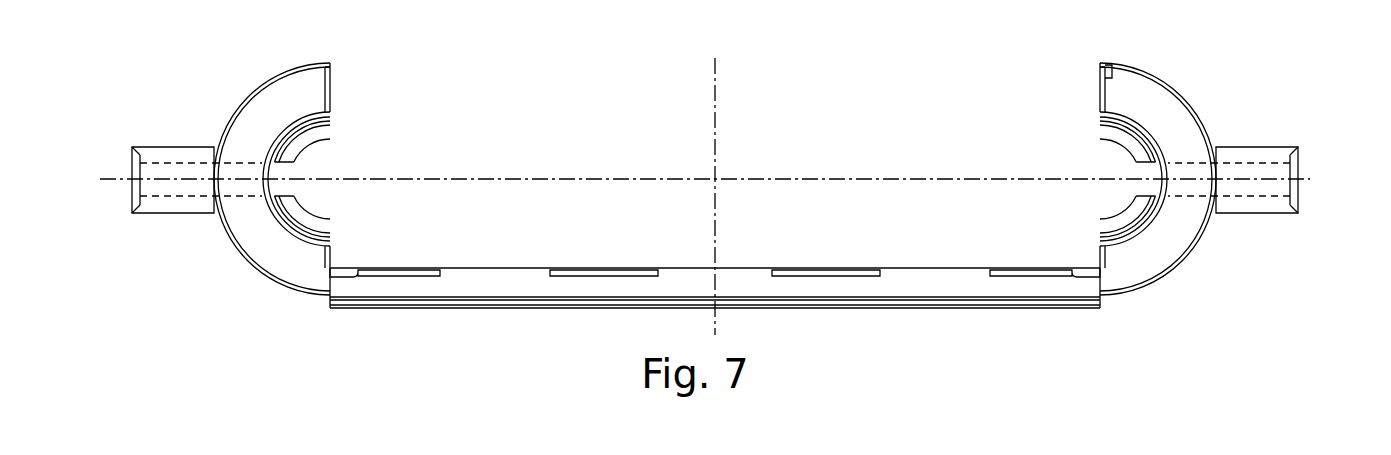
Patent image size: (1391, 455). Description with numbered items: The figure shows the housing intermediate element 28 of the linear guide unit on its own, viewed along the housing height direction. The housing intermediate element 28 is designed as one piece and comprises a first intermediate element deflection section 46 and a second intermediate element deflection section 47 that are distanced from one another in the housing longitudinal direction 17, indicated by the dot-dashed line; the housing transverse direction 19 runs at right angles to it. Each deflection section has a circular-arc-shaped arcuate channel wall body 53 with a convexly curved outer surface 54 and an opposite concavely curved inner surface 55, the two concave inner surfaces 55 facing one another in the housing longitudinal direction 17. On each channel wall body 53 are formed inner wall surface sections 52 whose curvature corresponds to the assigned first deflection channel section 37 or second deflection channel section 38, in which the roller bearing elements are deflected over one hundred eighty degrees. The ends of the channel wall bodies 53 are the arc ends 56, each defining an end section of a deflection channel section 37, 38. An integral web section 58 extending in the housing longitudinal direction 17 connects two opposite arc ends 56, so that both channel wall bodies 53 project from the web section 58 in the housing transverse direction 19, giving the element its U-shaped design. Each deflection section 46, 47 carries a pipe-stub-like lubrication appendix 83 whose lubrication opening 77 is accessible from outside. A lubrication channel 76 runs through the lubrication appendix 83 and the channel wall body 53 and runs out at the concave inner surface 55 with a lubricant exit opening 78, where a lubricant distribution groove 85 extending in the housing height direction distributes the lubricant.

The housing longitudinal direction 17 is at (823, 183).
The housing transverse direction 19 is at (718, 130).
The housing intermediate element 28 is at (1198, 76).
The first deflection channel section 37 is at (277, 253).
The second deflection channel section 38 is at (1173, 237).
The first intermediate element deflection section 46 is at (215, 240).
The second intermediate element deflection section 47 is at (1160, 290).
The inner wall surface section 52 is at (247, 117).
The arcuate channel wall body 53 is at (238, 140).
The convexly curved outer surface 54 is at (207, 132).
The concavely curved inner surface 55 is at (323, 147).
The arc end 56 is at (291, 93).
The web section 58 is at (937, 282).
The lubrication channel 76 is at (164, 198).
The lubrication opening 77 is at (130, 191).
The lubricant exit opening 78 is at (257, 190).
The lubrication appendix 83 is at (150, 157).
The lubricant distribution groove 85 is at (267, 190).